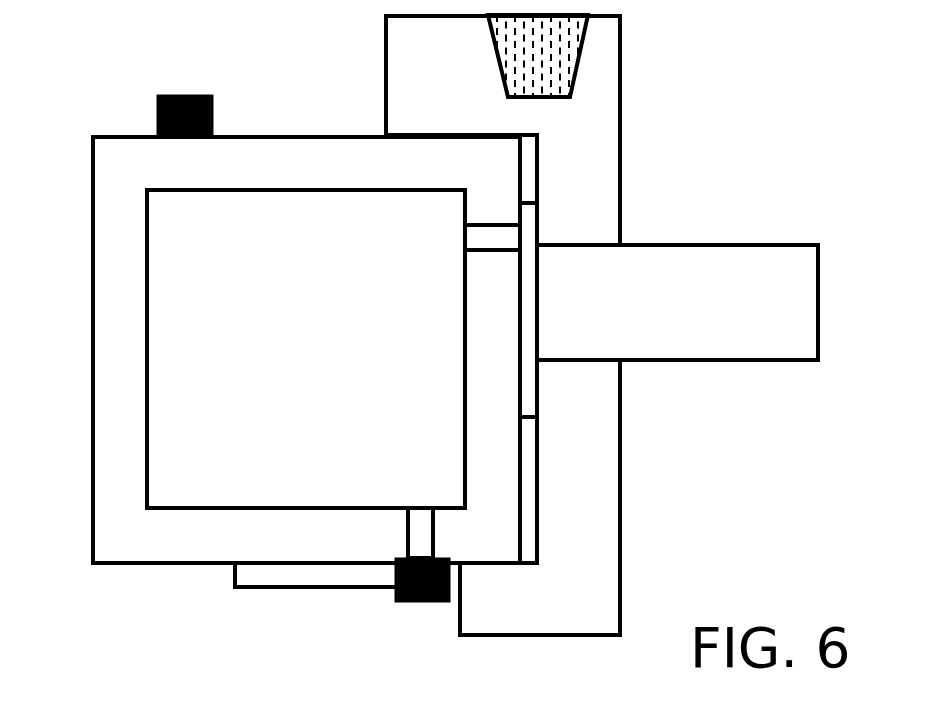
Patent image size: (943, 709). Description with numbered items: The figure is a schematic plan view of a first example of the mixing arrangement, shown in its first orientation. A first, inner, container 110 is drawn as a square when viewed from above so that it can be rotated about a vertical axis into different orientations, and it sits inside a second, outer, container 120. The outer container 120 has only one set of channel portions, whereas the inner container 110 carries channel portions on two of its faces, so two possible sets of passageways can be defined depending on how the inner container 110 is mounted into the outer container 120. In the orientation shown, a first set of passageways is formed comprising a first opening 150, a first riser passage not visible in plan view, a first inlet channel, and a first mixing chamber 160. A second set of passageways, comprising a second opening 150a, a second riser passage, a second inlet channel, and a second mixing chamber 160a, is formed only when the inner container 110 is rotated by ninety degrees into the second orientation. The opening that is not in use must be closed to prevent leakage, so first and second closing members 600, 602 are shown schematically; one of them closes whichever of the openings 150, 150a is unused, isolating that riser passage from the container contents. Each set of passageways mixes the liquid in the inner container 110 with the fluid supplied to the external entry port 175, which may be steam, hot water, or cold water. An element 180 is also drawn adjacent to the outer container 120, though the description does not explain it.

The first inner container 110 is at (112, 136).
The second outer container 120 is at (620, 437).
The first opening 150 is at (465, 241).
The second opening 150a is at (418, 506).
The first mixing chamber 160 is at (520, 277).
The second mixing chamber 160a is at (235, 575).
The external entry port 175 is at (577, 69).
The arm 180 is at (693, 245).
The first closing member 600 is at (415, 602).
The second closing member 602 is at (200, 95).